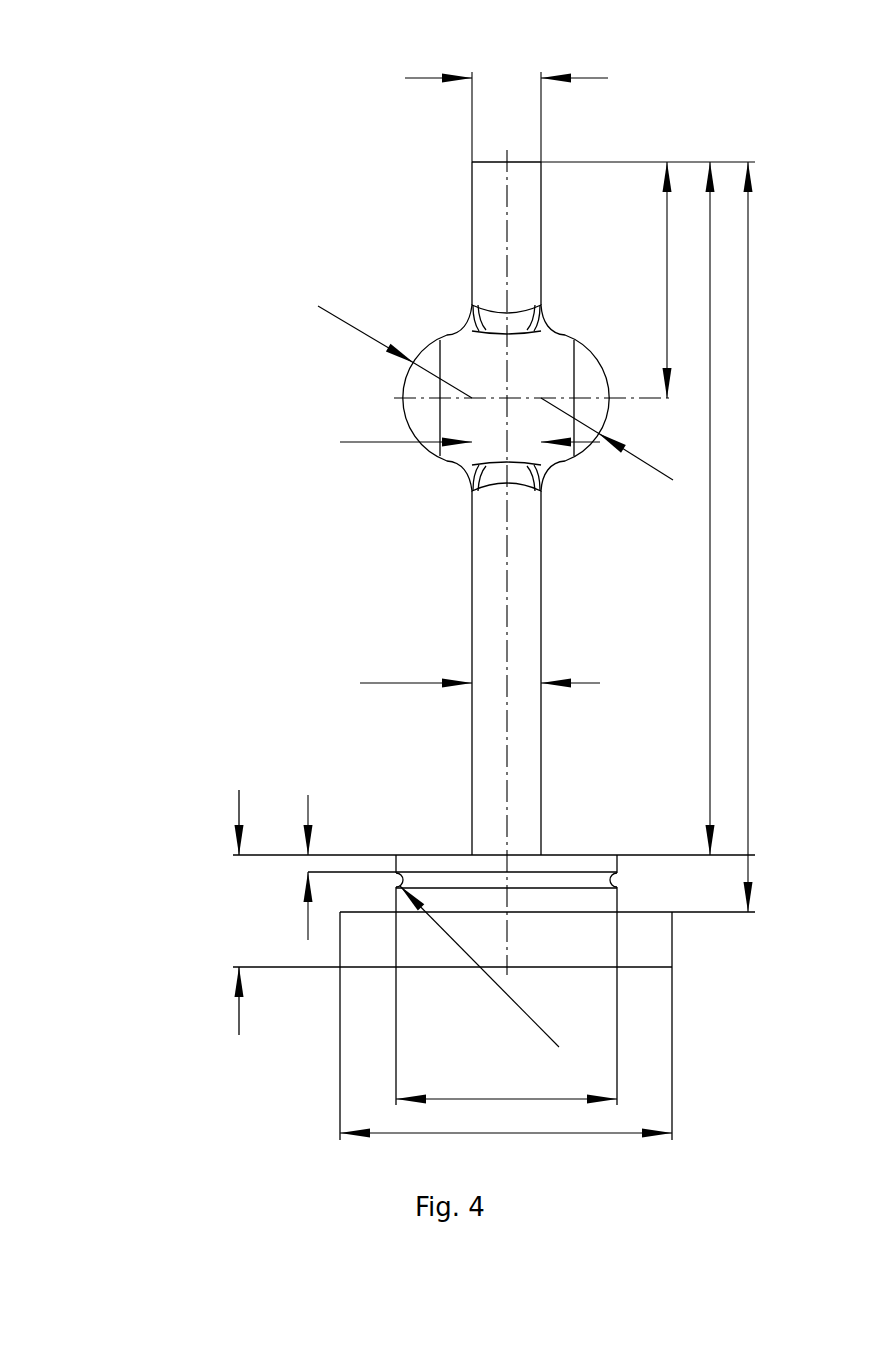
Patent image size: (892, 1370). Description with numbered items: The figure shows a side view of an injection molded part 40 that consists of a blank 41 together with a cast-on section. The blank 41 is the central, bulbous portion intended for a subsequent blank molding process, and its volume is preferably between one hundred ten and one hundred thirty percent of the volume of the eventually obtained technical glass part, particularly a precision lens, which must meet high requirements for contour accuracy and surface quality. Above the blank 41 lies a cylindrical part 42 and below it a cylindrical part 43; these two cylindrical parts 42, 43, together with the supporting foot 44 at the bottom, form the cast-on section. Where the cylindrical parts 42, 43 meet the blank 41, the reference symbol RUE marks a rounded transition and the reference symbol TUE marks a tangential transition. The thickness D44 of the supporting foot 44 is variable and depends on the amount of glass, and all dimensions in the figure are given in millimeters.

The injection molded part 40 is at (173, 172).
The blank 41 is at (412, 385).
The cylindrical part 42 is at (486, 191).
The cylindrical part 43 is at (490, 750).
The supporting foot 44 is at (593, 942).
The thickness of supporting foot D44 is at (239, 907).
The rounded transition RUE is at (472, 313).
The tangential transition TUE is at (452, 331).